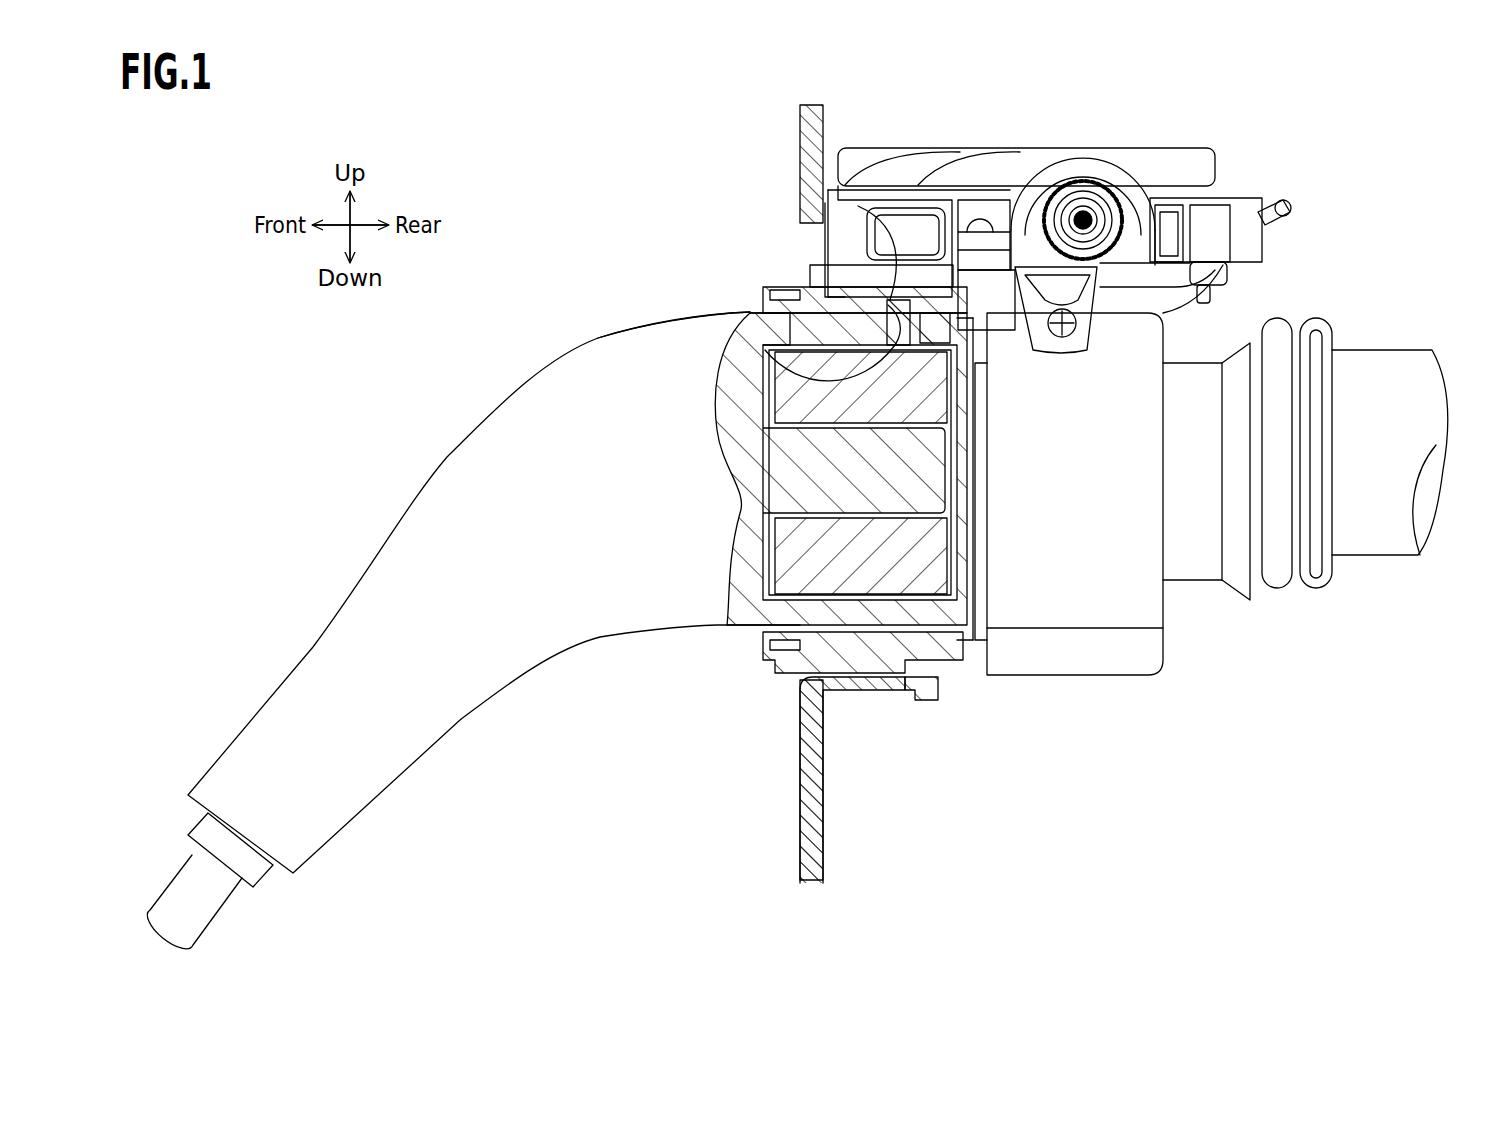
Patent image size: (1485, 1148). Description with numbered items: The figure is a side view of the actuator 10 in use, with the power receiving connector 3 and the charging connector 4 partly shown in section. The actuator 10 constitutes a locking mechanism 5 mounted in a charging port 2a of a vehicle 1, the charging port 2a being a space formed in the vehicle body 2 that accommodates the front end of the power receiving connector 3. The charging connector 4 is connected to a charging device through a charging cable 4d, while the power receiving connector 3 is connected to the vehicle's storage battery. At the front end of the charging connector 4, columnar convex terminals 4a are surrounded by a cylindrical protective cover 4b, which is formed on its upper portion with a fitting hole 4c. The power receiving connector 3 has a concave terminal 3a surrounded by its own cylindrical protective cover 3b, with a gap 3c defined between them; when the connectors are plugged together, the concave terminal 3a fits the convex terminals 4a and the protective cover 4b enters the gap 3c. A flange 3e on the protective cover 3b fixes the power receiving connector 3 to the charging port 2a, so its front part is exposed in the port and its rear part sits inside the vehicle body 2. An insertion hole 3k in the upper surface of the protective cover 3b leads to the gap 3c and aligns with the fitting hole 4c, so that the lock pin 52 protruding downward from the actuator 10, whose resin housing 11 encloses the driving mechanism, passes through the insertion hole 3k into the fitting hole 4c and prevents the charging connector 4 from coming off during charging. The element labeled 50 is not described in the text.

The vehicle 1 is at (796, 128).
The vehicle body 2 is at (808, 190).
The charging port 2a is at (810, 662).
The power receiving connector 3 is at (1070, 580).
The concave terminal 3a is at (917, 580).
The protective cover 3b is at (853, 655).
The gap 3c is at (740, 638).
The flange 3e is at (925, 700).
The insertion hole 3k is at (830, 248).
The charging connector 4 is at (457, 487).
The convex terminal 4a is at (700, 316).
The protective cover 4b is at (770, 290).
The fitting hole 4c is at (800, 327).
The charging cable 4d is at (210, 905).
The locking mechanism 5 is at (907, 125).
The actuator 10 is at (1097, 137).
The housing 11 is at (1174, 150).
The lid body 50 is at (918, 185).
The lock pin 52 is at (905, 335).